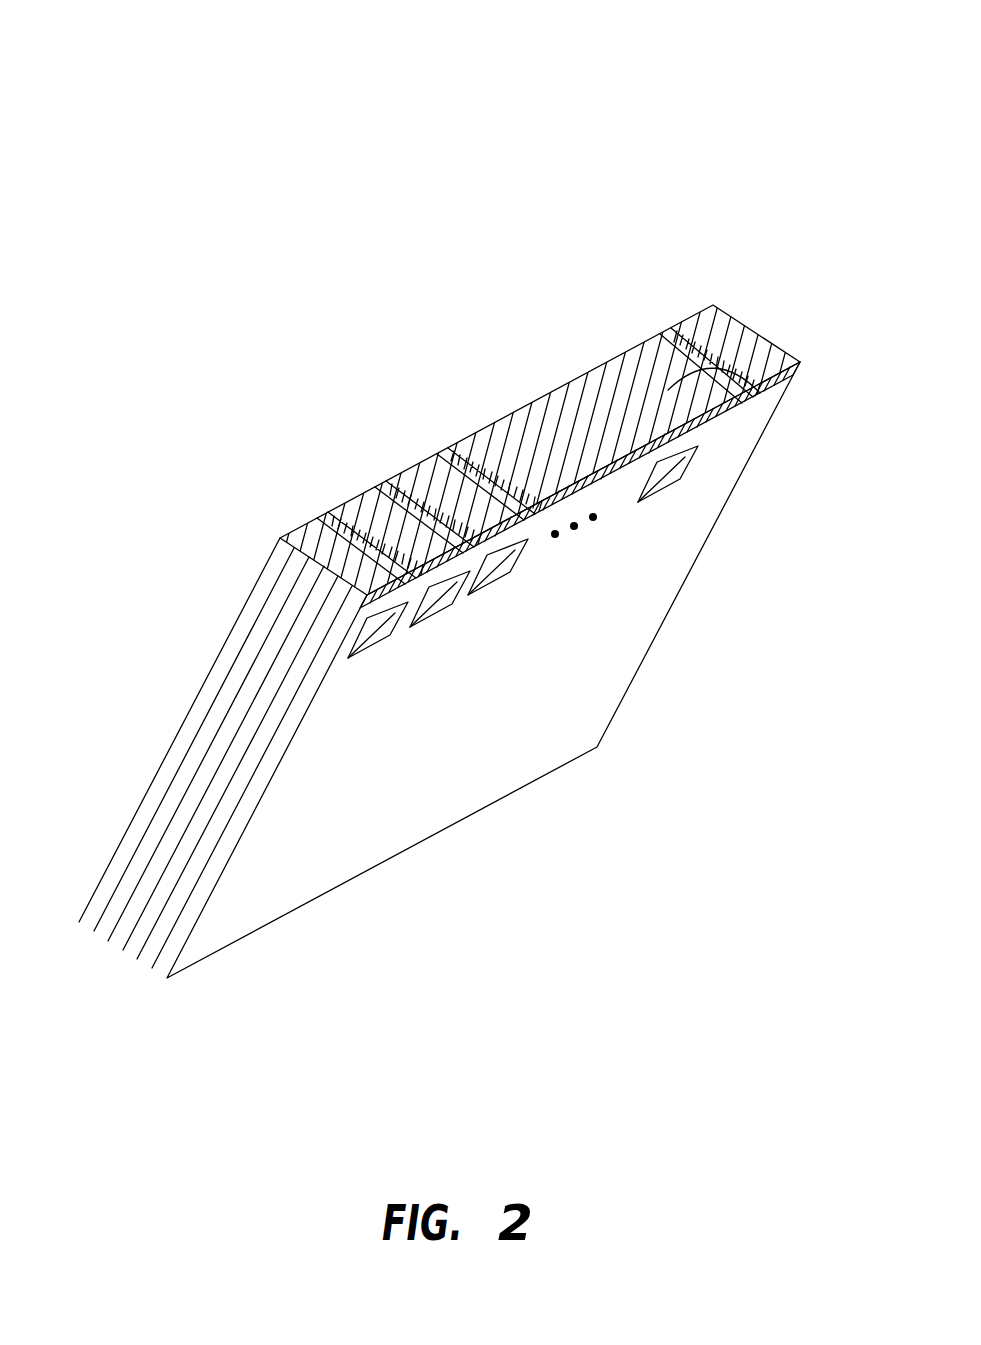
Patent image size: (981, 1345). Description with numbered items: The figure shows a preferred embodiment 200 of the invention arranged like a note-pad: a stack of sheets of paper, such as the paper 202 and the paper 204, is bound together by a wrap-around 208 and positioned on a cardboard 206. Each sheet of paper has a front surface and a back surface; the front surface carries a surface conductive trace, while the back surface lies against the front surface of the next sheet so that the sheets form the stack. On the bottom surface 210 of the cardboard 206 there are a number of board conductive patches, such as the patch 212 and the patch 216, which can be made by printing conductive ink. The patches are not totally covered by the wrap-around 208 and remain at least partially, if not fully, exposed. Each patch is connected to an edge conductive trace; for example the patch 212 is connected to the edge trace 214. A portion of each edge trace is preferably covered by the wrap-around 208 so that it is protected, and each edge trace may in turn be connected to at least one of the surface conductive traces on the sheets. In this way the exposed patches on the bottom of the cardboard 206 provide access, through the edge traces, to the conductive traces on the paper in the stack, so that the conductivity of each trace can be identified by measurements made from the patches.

The preferred embodiment 200 is at (812, 78).
The paper 202 is at (110, 930).
The paper 204 is at (147, 950).
The cardboard 206 is at (697, 562).
The wrap-around 208 is at (735, 338).
The bottom surface 210 is at (518, 728).
The board conductive patch 212 is at (681, 472).
The edge conductive trace 214 is at (770, 394).
The board conductive patch 216 is at (515, 572).